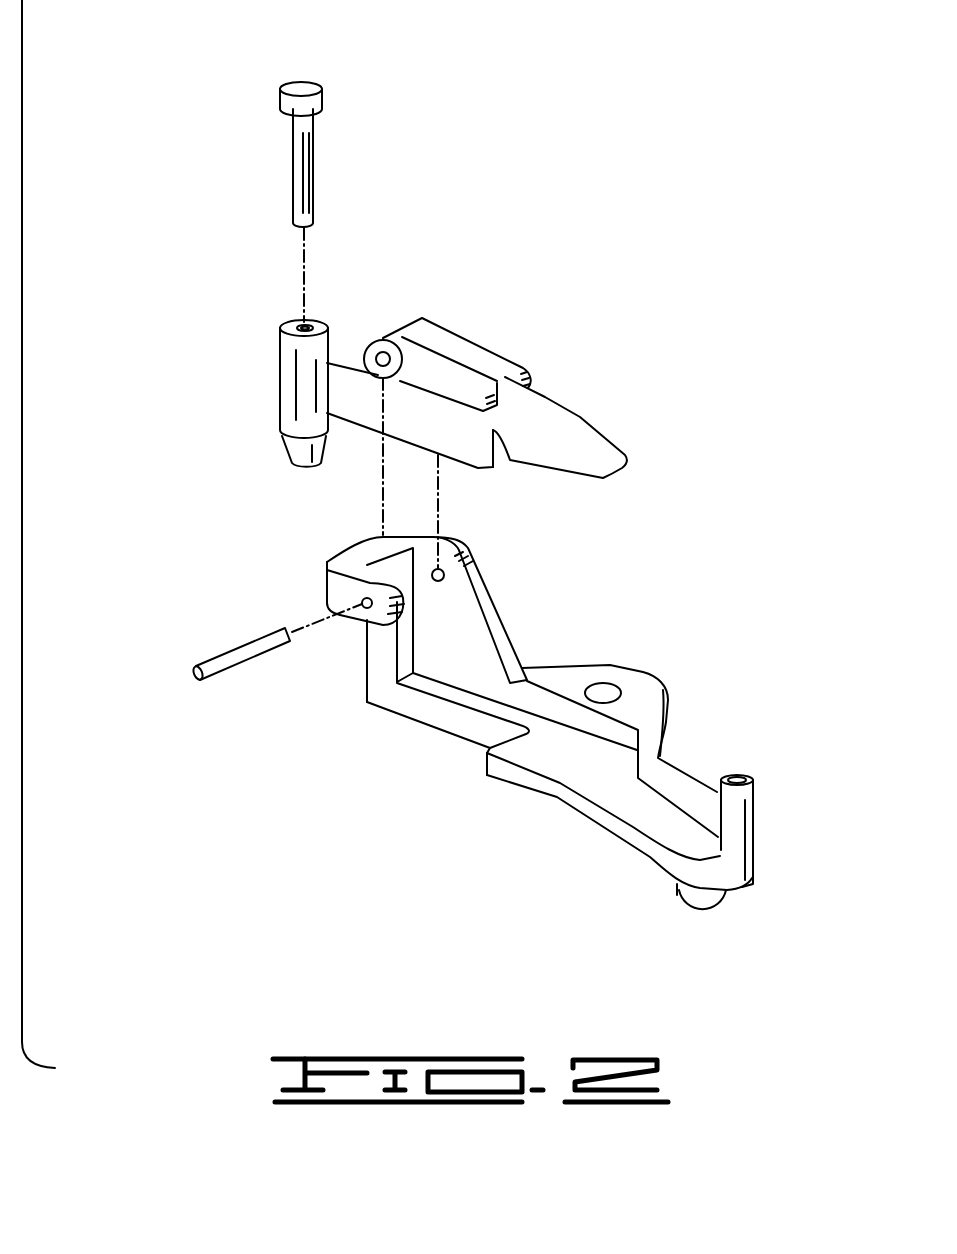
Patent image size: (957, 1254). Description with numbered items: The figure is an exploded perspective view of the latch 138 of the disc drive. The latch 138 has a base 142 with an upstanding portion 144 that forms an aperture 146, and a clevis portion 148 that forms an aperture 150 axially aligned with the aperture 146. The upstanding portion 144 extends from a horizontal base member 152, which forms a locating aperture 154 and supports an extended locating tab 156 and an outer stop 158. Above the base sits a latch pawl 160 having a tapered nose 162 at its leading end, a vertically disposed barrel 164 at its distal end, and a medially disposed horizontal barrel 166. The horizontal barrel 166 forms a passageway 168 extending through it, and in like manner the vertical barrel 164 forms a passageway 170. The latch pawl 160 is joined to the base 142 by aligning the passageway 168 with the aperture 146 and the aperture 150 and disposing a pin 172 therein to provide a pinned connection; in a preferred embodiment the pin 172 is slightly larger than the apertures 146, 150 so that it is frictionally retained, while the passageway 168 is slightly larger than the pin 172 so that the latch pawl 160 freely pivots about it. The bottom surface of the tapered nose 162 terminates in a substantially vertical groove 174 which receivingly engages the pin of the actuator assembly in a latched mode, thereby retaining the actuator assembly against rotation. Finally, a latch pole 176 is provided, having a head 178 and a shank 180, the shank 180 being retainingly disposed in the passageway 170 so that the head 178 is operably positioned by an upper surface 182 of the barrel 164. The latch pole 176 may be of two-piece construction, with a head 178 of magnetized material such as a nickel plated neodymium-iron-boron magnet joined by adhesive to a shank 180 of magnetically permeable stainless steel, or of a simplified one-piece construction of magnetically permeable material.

The latch 138 is at (520, 128).
The base 142 is at (536, 751).
The upstanding portion 144 is at (417, 615).
The aperture 146 is at (442, 584).
The clevis portion 148 is at (352, 557).
The aperture 150 is at (365, 608).
The horizontal base member 152 is at (603, 775).
The locating aperture 154 is at (605, 692).
The extended locating tab 156 is at (708, 915).
The outer stop 158 is at (754, 803).
The latch pawl 160 is at (533, 343).
The tapered nose 162 is at (630, 461).
The vertically disposed barrel 164 is at (227, 354).
The horizontal barrel 166 is at (398, 332).
The passageway 168 is at (378, 338).
The passageway 170 is at (298, 324).
The pin 172 is at (222, 653).
The vertical groove 174 is at (527, 483).
The latch pole 176 is at (310, 157).
The head 178 is at (297, 116).
The shank 180 is at (302, 197).
The upper surface 182 is at (283, 323).